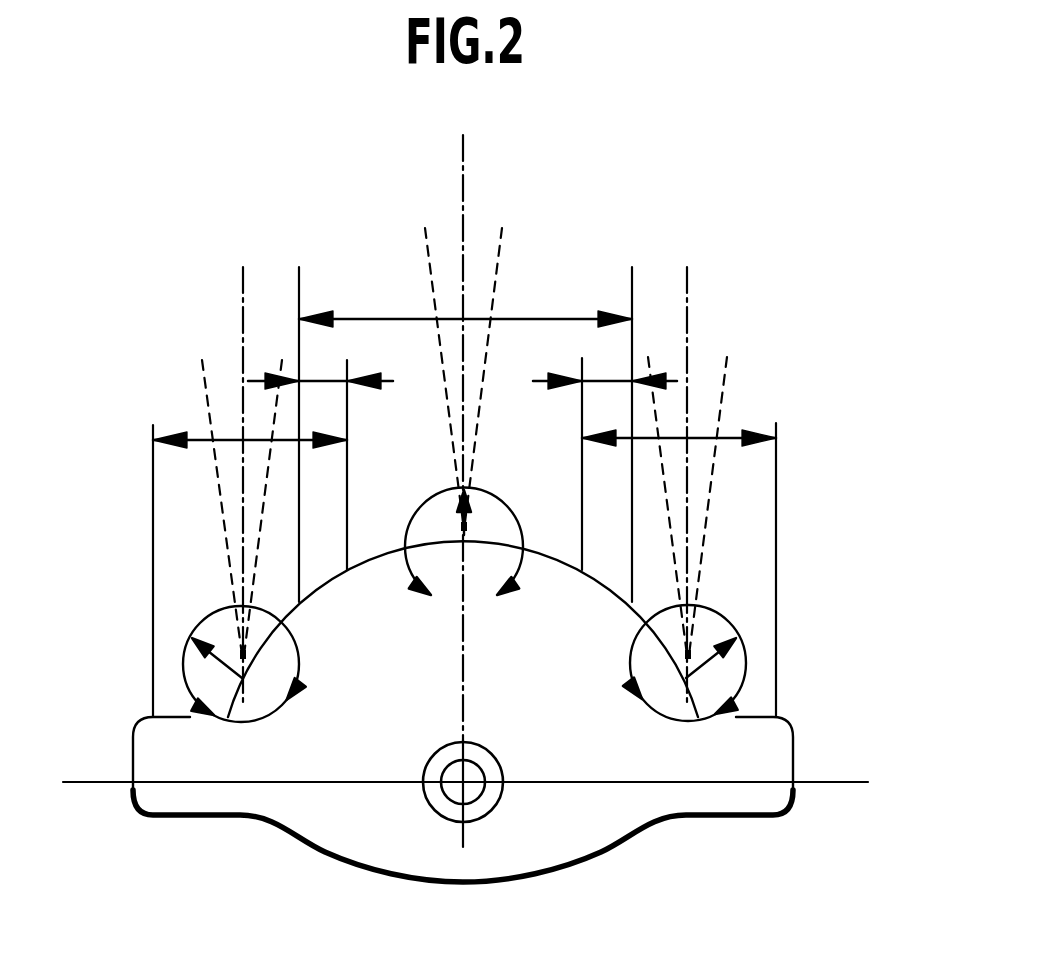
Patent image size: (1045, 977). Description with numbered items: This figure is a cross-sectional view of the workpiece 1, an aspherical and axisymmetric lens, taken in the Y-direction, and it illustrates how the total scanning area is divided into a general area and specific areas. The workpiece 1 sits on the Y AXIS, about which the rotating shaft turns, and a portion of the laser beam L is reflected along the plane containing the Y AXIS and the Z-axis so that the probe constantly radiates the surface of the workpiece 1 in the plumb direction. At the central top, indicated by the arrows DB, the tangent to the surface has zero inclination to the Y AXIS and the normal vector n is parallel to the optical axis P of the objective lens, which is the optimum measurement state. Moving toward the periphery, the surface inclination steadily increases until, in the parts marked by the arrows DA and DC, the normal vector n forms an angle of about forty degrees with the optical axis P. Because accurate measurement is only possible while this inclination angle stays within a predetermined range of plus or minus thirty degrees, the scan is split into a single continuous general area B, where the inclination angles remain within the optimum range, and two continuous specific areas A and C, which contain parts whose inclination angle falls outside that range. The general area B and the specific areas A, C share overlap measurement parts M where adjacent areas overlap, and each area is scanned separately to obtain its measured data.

The workpiece 1 is at (313, 847).
The optical axis P is at (465, 160).
The laser beam L is at (502, 233).
The specific area A is at (230, 440).
The general area B is at (345, 319).
The specific area C is at (700, 433).
The overlap measurement part M is at (462, 451).
The normal vector n is at (464, 605).
The peripheral area arrow DA is at (246, 519).
The central top arrow DB is at (438, 584).
The peripheral area arrow DC is at (681, 518).
The Y-axis Y AXIS is at (467, 783).